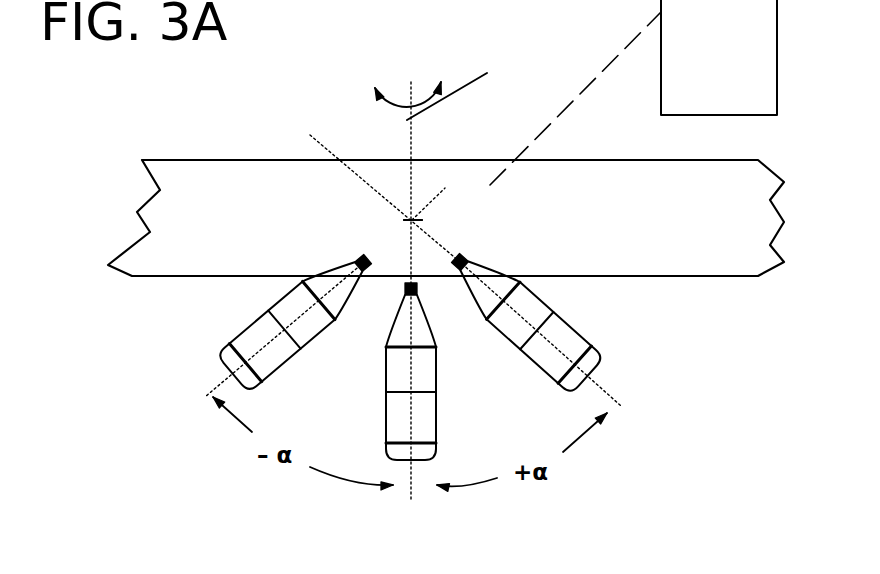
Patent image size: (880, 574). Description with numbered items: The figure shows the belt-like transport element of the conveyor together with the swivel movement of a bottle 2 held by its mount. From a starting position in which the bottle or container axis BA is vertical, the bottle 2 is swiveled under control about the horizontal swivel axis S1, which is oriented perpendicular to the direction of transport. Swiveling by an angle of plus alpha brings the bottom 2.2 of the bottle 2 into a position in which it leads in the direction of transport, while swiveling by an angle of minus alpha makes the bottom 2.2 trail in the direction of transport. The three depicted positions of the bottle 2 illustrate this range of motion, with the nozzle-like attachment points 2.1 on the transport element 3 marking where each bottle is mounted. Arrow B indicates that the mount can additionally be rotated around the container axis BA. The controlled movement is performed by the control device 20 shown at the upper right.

The bottle 2 is at (258, 333).
The container mouth / nozzle 2.1 is at (363, 262).
The bottom 2.2 is at (225, 367).
The conveyor / support 3 is at (608, 210).
The control device 20 is at (733, 78).
The arrow B is at (378, 88).
The bottle or container axis BA is at (487, 73).
The horizontal swivel axis S1 is at (414, 220).